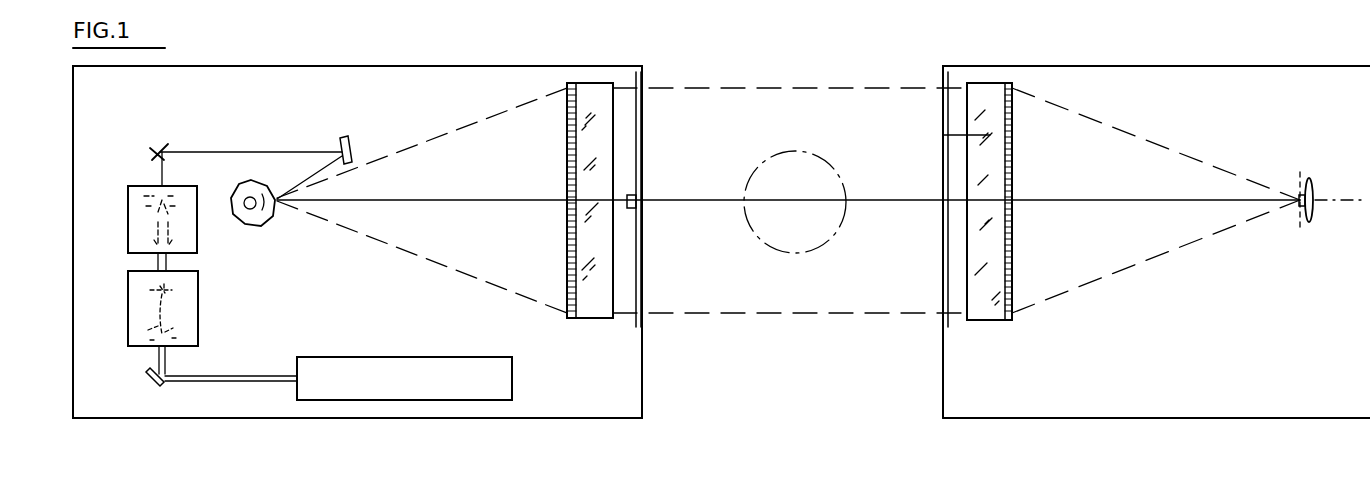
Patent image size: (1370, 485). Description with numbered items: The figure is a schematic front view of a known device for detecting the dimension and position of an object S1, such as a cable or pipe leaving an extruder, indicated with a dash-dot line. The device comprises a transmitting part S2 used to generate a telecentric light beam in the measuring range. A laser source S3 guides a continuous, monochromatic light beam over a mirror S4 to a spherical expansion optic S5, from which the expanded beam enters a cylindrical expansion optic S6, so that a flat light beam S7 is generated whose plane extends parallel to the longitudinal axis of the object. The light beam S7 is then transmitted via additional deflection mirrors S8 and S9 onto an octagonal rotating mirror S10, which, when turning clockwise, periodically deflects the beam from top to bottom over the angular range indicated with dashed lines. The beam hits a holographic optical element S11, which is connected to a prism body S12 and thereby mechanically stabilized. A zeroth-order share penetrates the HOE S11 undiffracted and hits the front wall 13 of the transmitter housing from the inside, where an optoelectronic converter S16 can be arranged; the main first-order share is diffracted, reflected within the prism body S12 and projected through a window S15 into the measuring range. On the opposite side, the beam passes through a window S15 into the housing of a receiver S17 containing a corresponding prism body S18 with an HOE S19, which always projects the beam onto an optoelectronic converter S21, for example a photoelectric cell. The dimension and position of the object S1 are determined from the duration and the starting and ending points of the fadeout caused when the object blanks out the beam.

The object S1 is at (832, 162).
The transmitting part S2 is at (385, 56).
The laser source S3 is at (378, 368).
The mirror S4 is at (150, 380).
The spherical expansion optic S5 is at (130, 305).
The cylindrical expansion optic S6 is at (130, 218).
The light beam S7 is at (243, 128).
The deflection mirror S8 is at (158, 150).
The deflection mirror S9 is at (342, 138).
The octagonal rotating mirror S10 is at (252, 226).
The holographic optical element S11 is at (567, 135).
The prism body S12 is at (590, 118).
The housing wall 13 is at (640, 376).
The window S15 is at (641, 290).
The optoelectronic converter S16 is at (640, 210).
The receiver S17 is at (1180, 40).
The prism body S18 is at (943, 135).
The holographic optical element S19 is at (1012, 150).
The optoelectronic converter S21 is at (1299, 176).